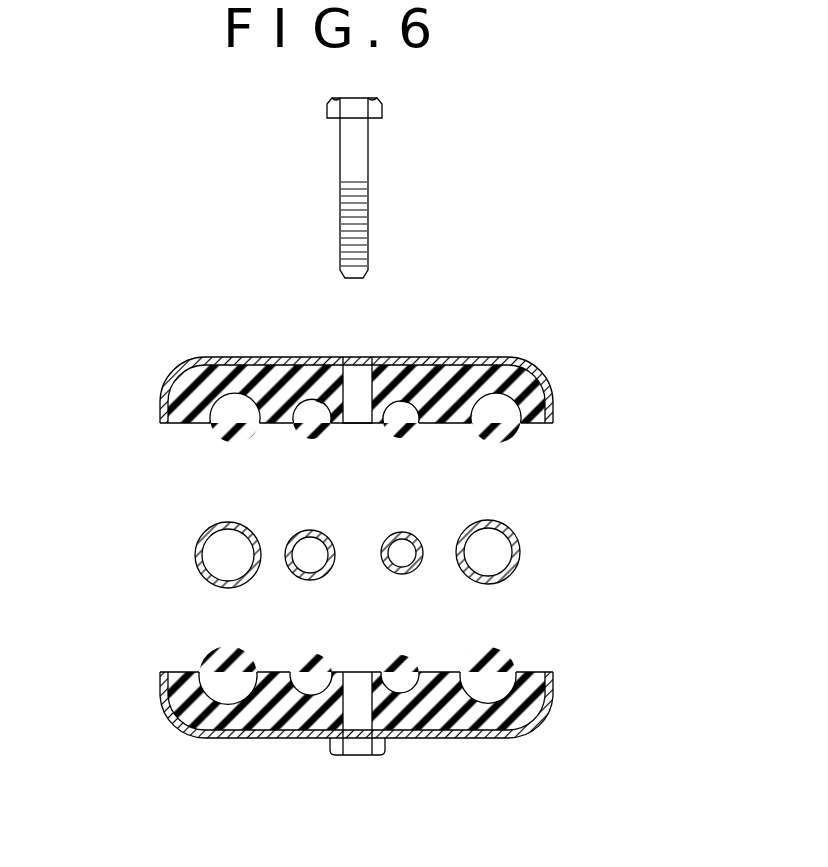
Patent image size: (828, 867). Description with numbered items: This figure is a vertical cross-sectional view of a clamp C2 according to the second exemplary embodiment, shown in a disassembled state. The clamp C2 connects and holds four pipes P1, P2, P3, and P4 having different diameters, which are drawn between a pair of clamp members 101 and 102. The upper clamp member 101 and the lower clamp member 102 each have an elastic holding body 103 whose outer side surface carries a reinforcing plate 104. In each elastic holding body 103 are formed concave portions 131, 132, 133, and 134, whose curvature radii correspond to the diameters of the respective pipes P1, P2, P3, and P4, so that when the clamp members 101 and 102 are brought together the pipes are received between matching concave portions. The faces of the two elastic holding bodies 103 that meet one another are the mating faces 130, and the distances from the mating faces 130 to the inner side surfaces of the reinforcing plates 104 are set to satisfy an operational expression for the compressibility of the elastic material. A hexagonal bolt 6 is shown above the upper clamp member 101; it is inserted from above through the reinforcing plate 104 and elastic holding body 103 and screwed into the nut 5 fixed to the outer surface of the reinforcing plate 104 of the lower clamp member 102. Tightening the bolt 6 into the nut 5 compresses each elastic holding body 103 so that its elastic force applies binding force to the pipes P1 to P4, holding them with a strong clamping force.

The clamp C2 is at (510, 346).
The hexagonal bolt 6 is at (372, 158).
The nut 5 is at (357, 757).
The clamp member 101 is at (162, 367).
The clamp member 102 is at (182, 739).
The elastic holding body 103 is at (441, 382).
The reinforcing plate 104 is at (252, 357).
The mating face 130 is at (370, 424).
The concave portion 131 is at (213, 406).
The concave portion 132 is at (476, 408).
The concave portion 133 is at (318, 405).
The concave portion 134 is at (407, 405).
The pipe P1 is at (196, 556).
The pipe P2 is at (521, 552).
The pipe P3 is at (290, 536).
The pipe P4 is at (417, 539).